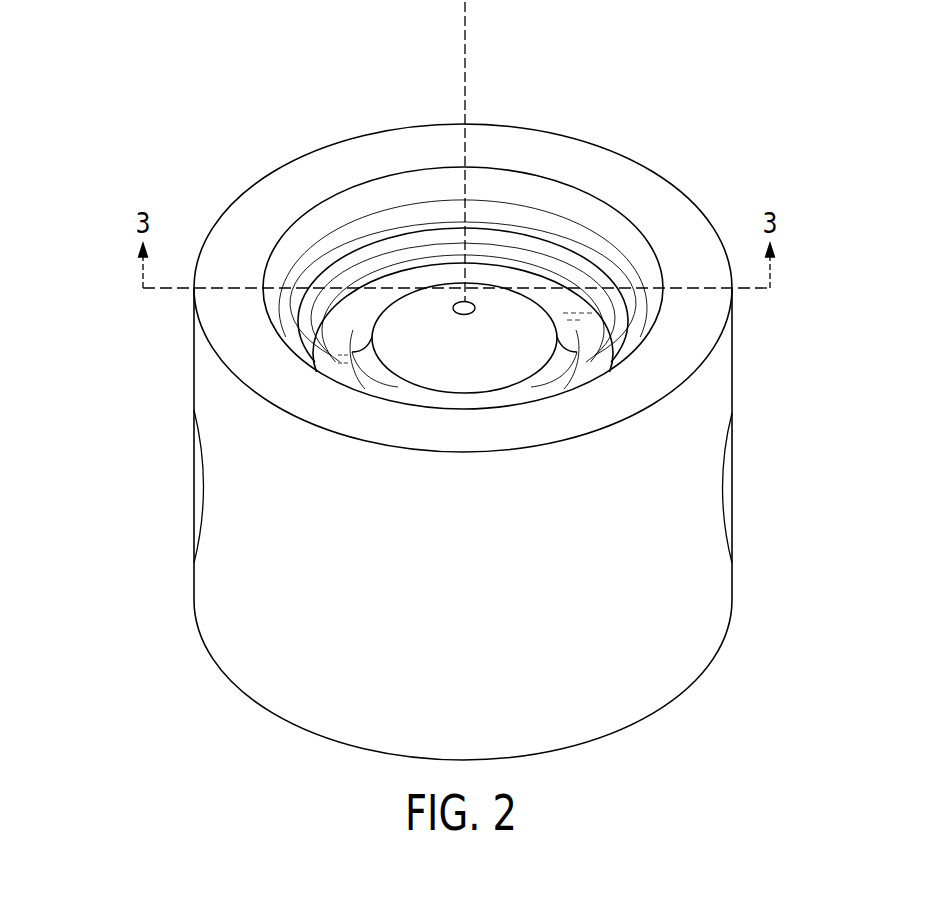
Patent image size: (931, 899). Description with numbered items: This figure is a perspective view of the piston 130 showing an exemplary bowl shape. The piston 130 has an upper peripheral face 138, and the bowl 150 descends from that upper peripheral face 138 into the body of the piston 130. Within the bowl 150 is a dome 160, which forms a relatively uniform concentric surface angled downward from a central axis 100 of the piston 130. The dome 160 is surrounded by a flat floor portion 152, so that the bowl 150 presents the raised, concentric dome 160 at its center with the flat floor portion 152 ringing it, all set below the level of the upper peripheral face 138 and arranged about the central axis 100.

The central axis 100 is at (468, 14).
The piston 130 is at (158, 348).
The upper peripheral face 138 is at (505, 152).
The bowl 150 is at (378, 215).
The flat floor portion 152 is at (596, 340).
The dome 160 is at (520, 314).